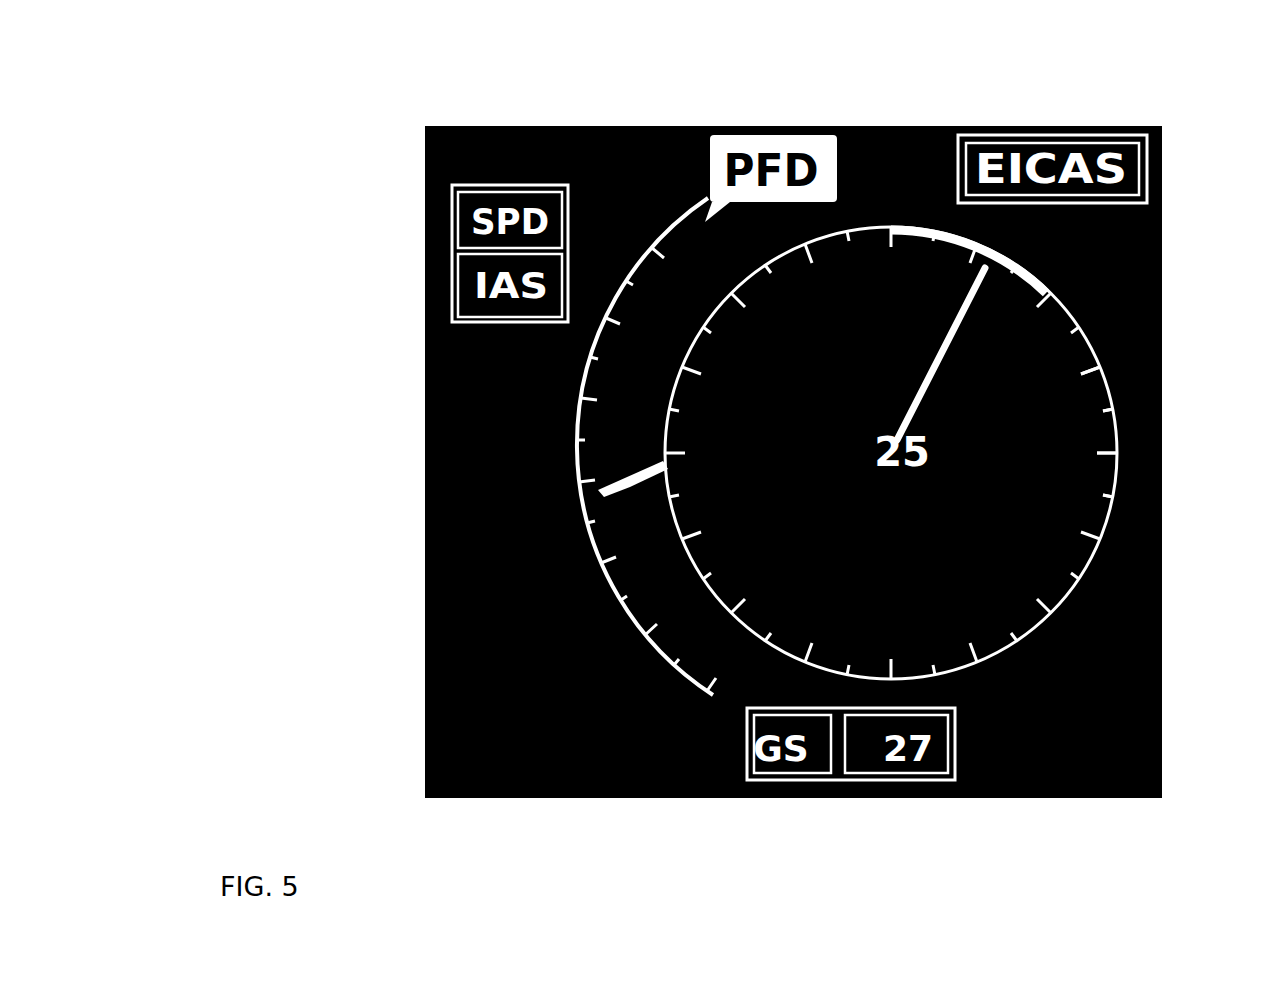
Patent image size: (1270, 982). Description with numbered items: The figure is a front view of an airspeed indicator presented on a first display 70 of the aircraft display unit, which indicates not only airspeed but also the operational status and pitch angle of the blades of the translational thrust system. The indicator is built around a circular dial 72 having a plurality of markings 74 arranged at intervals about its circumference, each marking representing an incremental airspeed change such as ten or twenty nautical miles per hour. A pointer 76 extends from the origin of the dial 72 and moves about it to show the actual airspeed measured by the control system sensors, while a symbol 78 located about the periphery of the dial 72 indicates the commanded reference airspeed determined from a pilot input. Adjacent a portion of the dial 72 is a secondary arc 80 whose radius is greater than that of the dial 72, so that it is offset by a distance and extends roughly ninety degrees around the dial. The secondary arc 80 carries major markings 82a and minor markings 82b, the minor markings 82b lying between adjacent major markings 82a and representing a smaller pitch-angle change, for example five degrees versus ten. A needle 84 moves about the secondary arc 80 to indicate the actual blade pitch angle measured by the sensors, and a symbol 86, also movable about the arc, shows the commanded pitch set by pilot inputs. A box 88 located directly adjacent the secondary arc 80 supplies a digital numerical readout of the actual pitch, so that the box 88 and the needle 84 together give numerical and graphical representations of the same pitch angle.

The first display 70 is at (330, 85).
The circular dial 72 is at (1110, 382).
The markings 74 is at (1113, 447).
The pointer 76 is at (935, 340).
The symbol 78 is at (1040, 300).
The secondary arc 80 is at (628, 610).
The major markings 82a is at (662, 248).
The minor markings 82b is at (625, 273).
The needle 84 is at (622, 497).
The symbol 86 is at (633, 555).
The box 88 is at (470, 462).